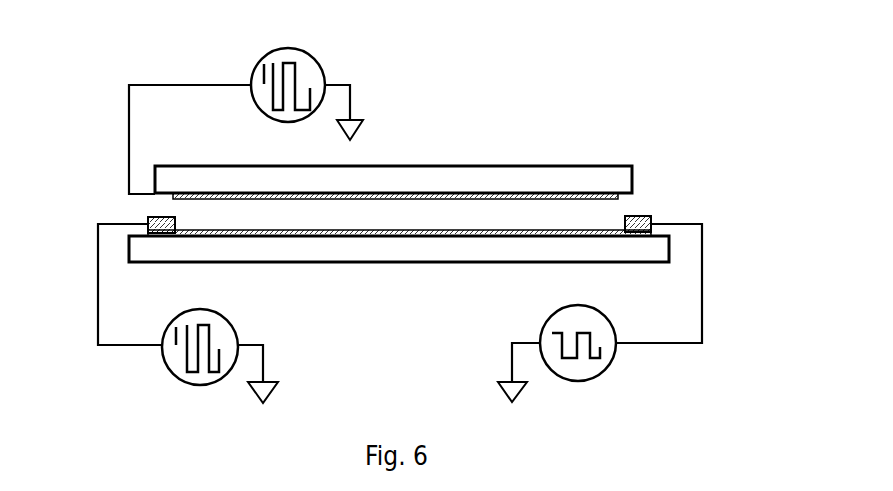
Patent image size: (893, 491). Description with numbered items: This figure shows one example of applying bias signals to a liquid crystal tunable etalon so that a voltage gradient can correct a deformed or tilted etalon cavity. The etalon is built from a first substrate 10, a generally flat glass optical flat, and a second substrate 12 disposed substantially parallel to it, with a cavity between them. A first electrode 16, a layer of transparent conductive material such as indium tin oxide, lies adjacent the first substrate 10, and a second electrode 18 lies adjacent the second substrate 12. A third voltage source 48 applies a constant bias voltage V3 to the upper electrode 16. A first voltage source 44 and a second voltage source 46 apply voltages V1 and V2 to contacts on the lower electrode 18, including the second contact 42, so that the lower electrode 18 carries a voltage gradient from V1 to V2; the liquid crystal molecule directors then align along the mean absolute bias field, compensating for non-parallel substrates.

The first substrate 10 is at (563, 178).
The second substrate 12 is at (399, 280).
The first electrode 16 is at (570, 202).
The second electrode 18 is at (220, 228).
The second contact 42 is at (648, 216).
The first voltage source 44 is at (236, 338).
The second voltage source 46 is at (597, 377).
The third voltage source 48 is at (316, 57).